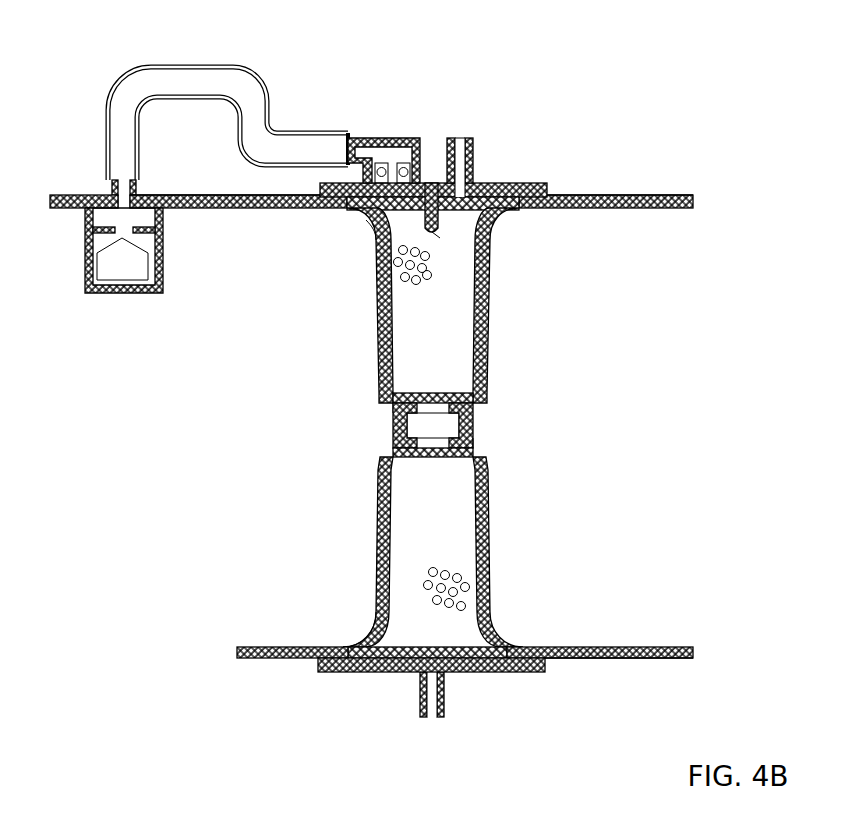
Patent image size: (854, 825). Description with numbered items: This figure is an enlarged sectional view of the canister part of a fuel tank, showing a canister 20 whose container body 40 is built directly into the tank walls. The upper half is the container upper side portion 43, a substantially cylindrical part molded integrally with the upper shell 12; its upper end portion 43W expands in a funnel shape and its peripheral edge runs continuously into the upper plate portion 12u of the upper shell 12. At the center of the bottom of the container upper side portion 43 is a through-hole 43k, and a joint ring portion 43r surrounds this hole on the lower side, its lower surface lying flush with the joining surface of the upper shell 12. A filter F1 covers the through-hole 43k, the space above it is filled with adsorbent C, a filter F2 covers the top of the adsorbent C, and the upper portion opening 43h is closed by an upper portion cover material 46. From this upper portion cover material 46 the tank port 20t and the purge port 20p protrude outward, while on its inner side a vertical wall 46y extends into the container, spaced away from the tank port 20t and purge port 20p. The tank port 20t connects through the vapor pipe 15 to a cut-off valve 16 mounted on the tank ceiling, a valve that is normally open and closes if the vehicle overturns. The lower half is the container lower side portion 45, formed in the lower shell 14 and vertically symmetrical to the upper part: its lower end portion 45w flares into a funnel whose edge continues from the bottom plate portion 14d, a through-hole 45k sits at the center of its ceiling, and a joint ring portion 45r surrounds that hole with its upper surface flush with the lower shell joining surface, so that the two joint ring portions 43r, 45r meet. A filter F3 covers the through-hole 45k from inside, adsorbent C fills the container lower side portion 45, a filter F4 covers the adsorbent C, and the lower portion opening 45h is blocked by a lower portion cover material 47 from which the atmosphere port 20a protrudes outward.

The upper shell 12 is at (371, 167).
The upper plate portion 12u is at (411, 165).
The lower shell 14 is at (465, 684).
The bottom plate portion 14d is at (619, 687).
The vapor pipe 15 is at (228, 113).
The cut-off valve 16 is at (117, 282).
The canister 20 is at (366, 427).
The tank port 20t is at (384, 133).
The purge port 20p is at (483, 141).
The atmosphere port 20a is at (460, 709).
The container body 40 is at (497, 425).
The container upper side portion 43 is at (454, 305).
The upper portion opening 43h is at (334, 240).
The through-hole 43k is at (392, 372).
The joint ring portion 43r is at (353, 397).
The upper end portion 43W is at (469, 220).
The container lower side portion 45 is at (461, 552).
The lower portion opening 45h is at (469, 634).
The through-hole 45k is at (390, 466).
The joint ring portion 45r is at (518, 445).
The lower end portion 45w is at (329, 616).
The upper portion cover material 46 is at (441, 148).
The vertical wall 46y is at (442, 284).
The lower portion cover material 47 is at (431, 689).
The adsorbent C is at (423, 428).
The filter F1 is at (495, 374).
The filter F2 is at (522, 258).
The filter F3 is at (502, 479).
The filter F4 is at (504, 615).